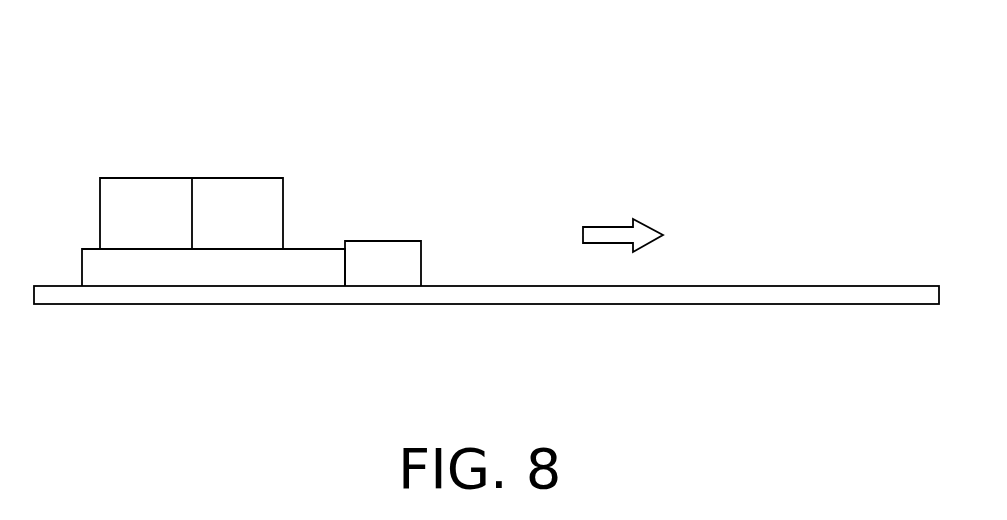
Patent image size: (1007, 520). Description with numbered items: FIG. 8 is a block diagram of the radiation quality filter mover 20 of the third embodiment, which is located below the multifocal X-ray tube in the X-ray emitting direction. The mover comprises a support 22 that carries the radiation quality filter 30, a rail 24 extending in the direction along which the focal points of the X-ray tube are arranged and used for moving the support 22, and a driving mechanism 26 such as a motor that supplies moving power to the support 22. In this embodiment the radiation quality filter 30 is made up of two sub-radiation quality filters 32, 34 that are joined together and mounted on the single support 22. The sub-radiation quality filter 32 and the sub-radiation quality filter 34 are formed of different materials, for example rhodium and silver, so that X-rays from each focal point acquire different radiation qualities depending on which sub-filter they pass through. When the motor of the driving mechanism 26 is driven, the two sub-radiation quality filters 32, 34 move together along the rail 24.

The radiation quality filter mover 20 is at (435, 177).
The support 22 is at (148, 277).
The rail 24 is at (648, 295).
The driving mechanism 26 is at (385, 253).
The radiation quality filter 30 is at (292, 120).
The sub-radiation quality filter 32 is at (237, 193).
The sub-radiation quality filter 34 is at (148, 193).